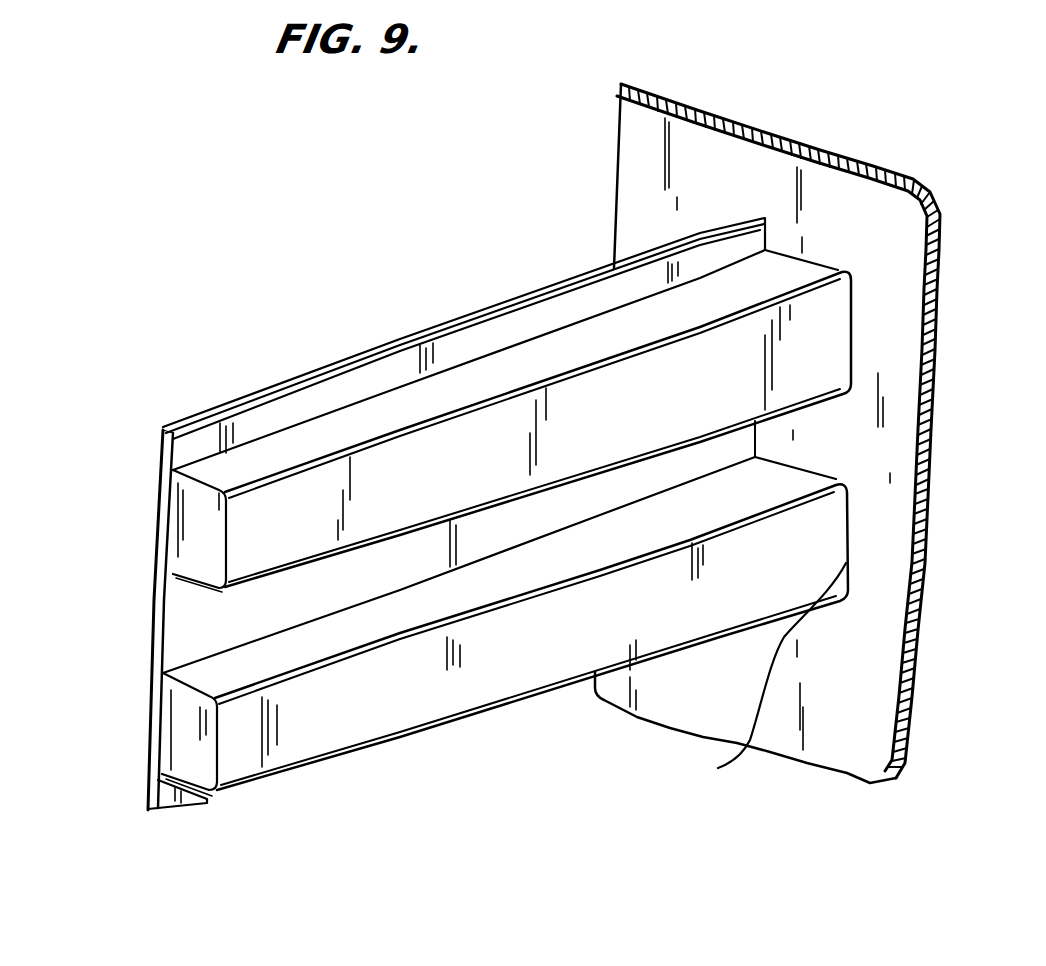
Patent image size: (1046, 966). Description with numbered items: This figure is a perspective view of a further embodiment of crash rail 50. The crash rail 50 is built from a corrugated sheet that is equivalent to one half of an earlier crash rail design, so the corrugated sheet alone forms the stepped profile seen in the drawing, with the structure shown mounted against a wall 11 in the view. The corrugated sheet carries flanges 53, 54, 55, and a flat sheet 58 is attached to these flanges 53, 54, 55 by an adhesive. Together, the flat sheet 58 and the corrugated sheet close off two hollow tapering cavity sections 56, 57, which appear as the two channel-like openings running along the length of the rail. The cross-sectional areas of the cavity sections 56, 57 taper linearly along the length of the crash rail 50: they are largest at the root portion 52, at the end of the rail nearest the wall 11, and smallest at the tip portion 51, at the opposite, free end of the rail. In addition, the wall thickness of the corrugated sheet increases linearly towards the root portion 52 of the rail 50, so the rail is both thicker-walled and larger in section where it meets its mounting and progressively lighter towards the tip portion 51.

The wall 11 is at (632, 136).
The crash rail 50 is at (264, 364).
The tip portion 51 is at (155, 637).
The root portion 52 is at (750, 680).
The flange 53 is at (382, 372).
The flange 54 is at (273, 617).
The flange 55 is at (187, 797).
The hollow tapering cavity section 56 is at (196, 540).
The hollow tapering cavity section 57 is at (186, 715).
The flat sheet 58 is at (161, 518).